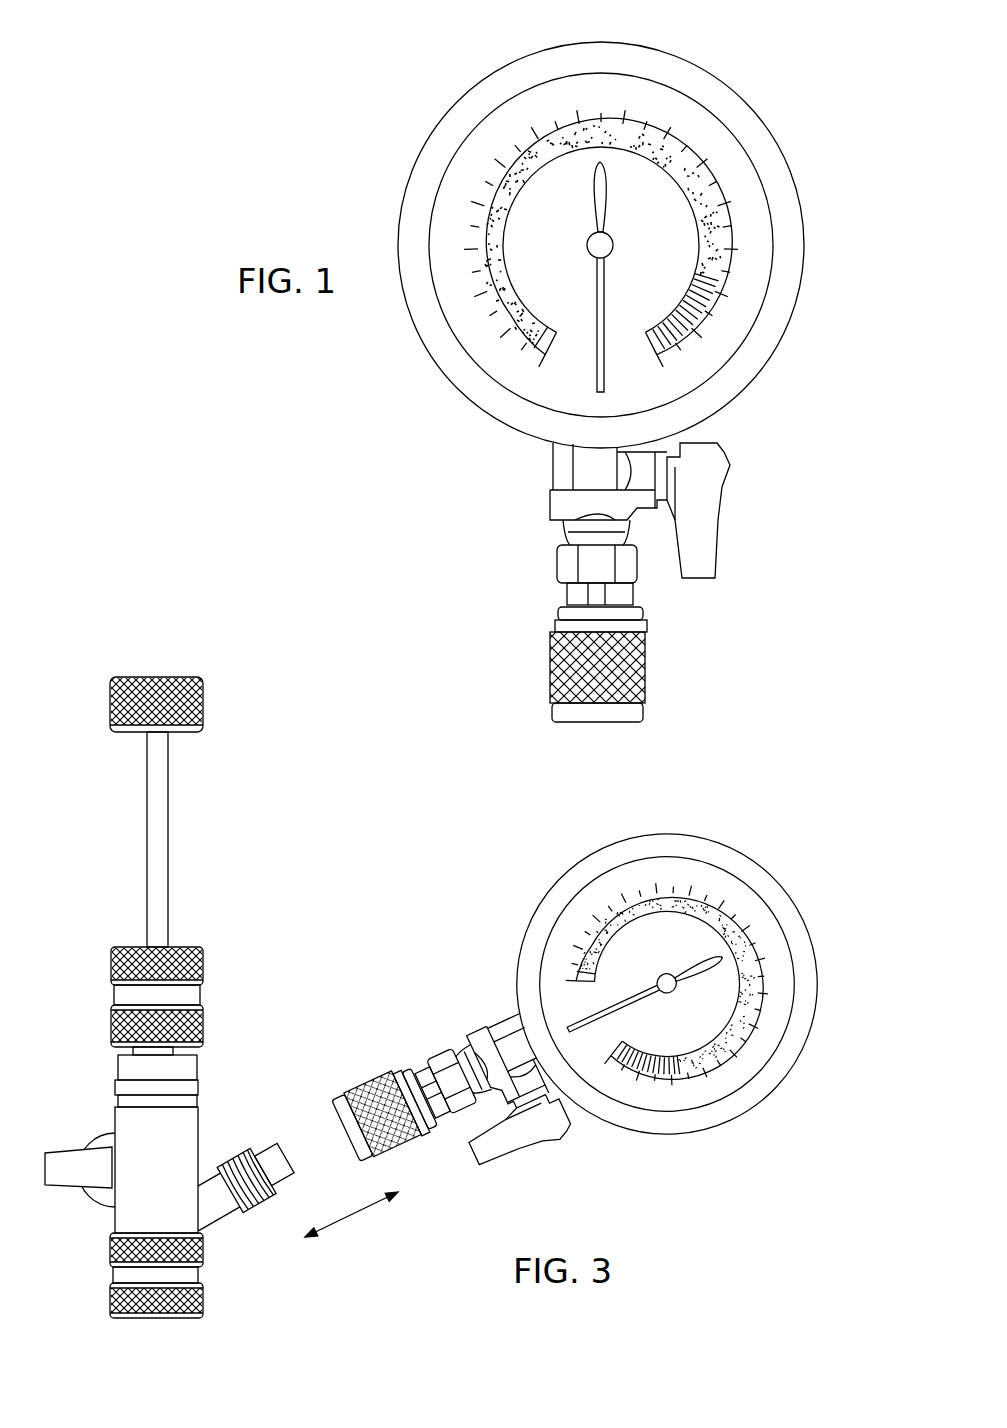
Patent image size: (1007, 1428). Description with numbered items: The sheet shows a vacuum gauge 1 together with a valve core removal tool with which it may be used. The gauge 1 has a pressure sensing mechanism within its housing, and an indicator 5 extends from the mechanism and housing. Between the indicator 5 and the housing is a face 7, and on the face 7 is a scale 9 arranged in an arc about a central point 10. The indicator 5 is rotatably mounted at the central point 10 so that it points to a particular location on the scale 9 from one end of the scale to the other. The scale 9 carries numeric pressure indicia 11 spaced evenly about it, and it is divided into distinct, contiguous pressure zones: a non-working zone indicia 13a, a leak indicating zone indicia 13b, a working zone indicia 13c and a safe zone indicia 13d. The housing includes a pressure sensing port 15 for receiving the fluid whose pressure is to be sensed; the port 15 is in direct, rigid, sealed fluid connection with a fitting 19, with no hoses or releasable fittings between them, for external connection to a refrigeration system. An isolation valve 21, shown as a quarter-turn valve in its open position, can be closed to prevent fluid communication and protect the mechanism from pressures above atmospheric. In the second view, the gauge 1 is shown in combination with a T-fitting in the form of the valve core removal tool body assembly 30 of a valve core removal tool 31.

In FIG. 1, the vacuum gauge 1 is at (606, 362).
In FIG. 3, the vacuum gauge 1 is at (775, 860).
In FIG. 1, the indicator 5 is at (597, 305).
In FIG. 1, the face 7 is at (540, 165).
In FIG. 1, the scale 9 is at (697, 118).
In FIG. 1, the central point 10 is at (608, 240).
In FIG. 1, the numeric pressure indicia 11 is at (647, 92).
In FIG. 1, the non-working zone indicia 13a is at (680, 296).
In FIG. 1, the leak indicating zone indicia 13b is at (707, 190).
In FIG. 1, the working zone indicia 13c is at (510, 327).
In FIG. 1, the safe zone indicia 13d is at (552, 357).
In FIG. 1, the pressure sensing port 15 is at (543, 448).
In FIG. 1, the fitting 19 is at (642, 667).
In FIG. 1, the isolation valve 21 is at (692, 499).
In FIG. 3, the valve core removal tool body assembly 30 is at (198, 1147).
In FIG. 3, the valve core removal tool 31 is at (272, 893).